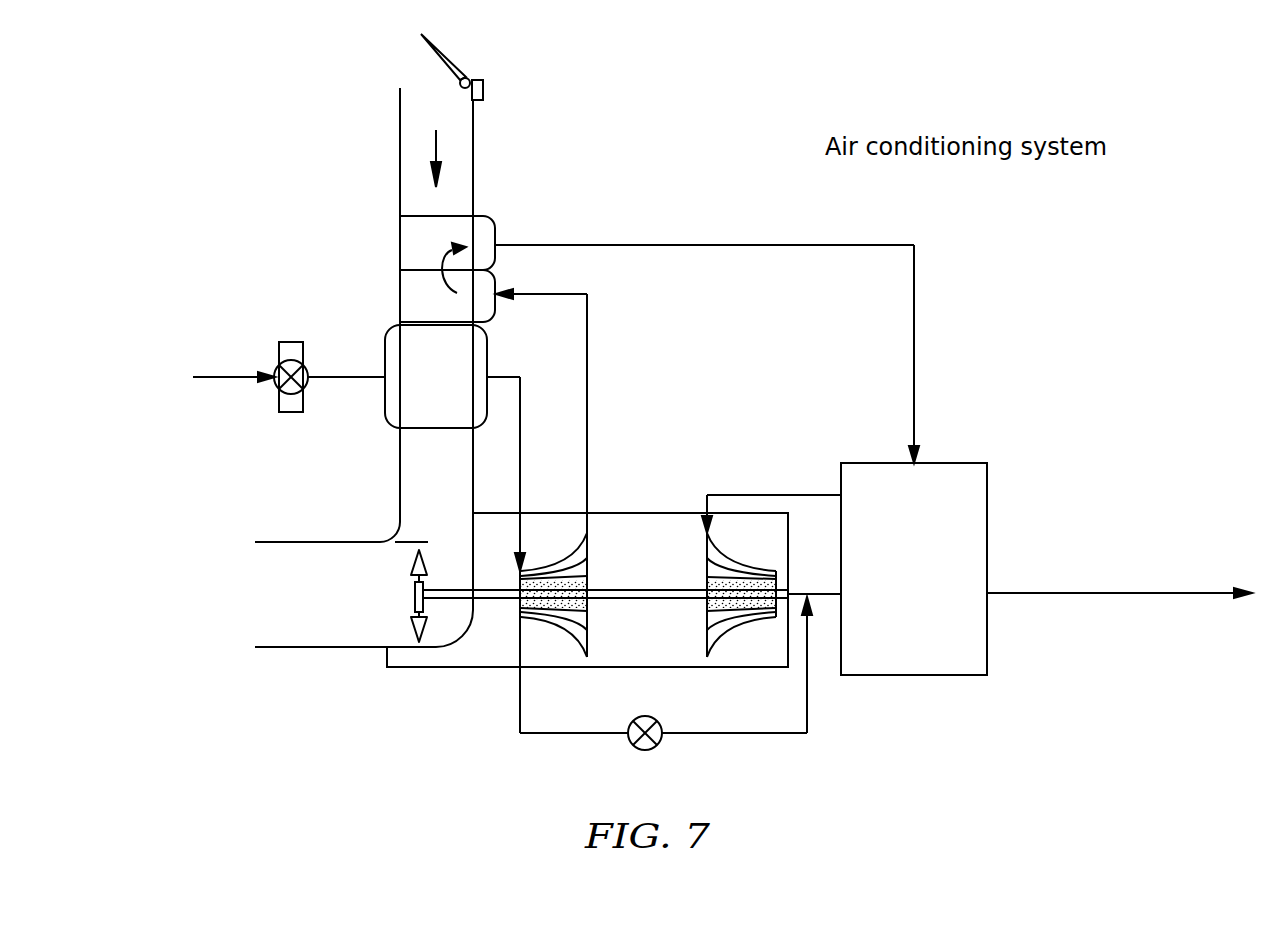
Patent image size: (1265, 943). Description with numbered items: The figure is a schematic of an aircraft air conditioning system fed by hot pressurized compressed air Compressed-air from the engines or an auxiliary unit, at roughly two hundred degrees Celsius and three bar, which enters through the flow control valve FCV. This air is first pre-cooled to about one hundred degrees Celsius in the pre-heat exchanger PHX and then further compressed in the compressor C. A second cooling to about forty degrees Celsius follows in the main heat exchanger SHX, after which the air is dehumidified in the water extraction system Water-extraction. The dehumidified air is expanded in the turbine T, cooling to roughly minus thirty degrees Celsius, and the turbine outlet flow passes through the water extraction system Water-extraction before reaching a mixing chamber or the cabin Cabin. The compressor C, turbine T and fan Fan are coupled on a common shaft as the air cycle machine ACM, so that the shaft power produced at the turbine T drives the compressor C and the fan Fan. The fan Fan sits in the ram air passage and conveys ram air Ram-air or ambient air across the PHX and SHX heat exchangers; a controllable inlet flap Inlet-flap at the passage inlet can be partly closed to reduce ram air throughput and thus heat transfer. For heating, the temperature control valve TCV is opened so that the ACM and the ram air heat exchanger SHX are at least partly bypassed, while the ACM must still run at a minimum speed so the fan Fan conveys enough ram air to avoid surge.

The ram air Ram-air is at (364, 358).
The ram air inlet flap Inlet-flap is at (493, 67).
The main heat exchanger SHX is at (447, 269).
The pre-heat exchanger PHX is at (436, 376).
The flow control valve FCV is at (289, 358).
The compressed air Compressed-air is at (222, 361).
The air cycle machine ACM is at (614, 590).
The compressor C is at (554, 595).
The turbine T is at (771, 576).
The fan Fan is at (391, 592).
The water extraction system Water-extraction is at (918, 588).
The temperature control valve TCV is at (666, 673).
The cabin Cabin is at (1119, 597).